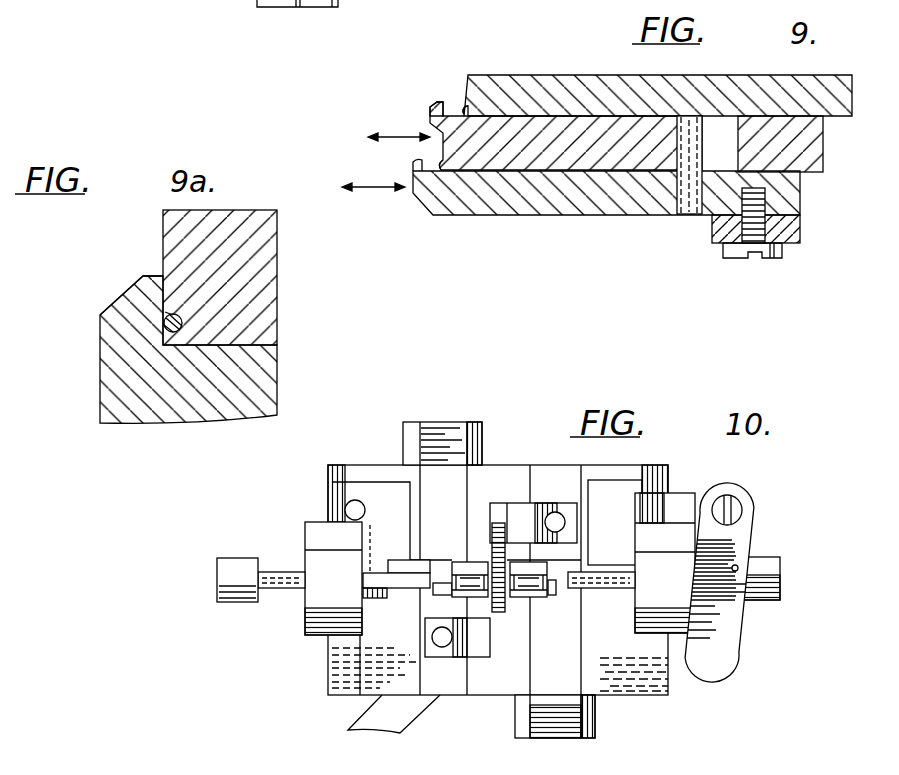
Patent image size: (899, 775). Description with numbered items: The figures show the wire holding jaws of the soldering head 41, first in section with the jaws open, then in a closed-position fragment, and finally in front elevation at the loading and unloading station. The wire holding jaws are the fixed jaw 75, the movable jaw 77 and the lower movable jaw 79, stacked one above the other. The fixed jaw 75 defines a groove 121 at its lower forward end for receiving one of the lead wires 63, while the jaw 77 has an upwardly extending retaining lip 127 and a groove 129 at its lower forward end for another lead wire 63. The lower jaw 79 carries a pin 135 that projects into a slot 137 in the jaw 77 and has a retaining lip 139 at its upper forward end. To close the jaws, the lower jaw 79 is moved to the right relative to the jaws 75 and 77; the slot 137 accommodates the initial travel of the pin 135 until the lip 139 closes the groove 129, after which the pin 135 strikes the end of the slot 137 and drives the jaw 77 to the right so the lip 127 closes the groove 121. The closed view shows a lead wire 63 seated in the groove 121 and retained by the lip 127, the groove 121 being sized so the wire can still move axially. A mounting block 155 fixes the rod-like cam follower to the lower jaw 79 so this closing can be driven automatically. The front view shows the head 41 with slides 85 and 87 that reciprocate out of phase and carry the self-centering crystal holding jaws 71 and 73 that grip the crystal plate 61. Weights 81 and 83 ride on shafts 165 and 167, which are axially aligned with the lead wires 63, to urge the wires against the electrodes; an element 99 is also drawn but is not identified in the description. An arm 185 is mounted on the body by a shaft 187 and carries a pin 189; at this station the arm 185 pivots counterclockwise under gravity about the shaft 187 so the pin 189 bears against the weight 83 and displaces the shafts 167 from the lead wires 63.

In FIG. 9, the wire holding jaw 75 is at (605, 75).
In FIG. 9A, the wire holding jaw 75 is at (258, 241).
In FIG. 9, the wire holding jaw 77 is at (426, 114).
In FIG. 9A, the wire holding jaw 77 is at (100, 388).
In FIG. 9, the lower jaw 79 is at (502, 216).
In FIG. 9, the groove 121 is at (468, 110).
In FIG. 9A, the groove 121 is at (172, 314).
In FIG. 9, the retaining lip 127 is at (438, 101).
In FIG. 9A, the retaining lip 127 is at (127, 298).
In FIG. 9, the groove 129 is at (446, 166).
In FIG. 9, the retaining lip 139 is at (416, 163).
In FIG. 9, the pin 135 is at (680, 141).
In FIG. 9, the slot 137 is at (732, 146).
In FIG. 9, the mounting block 155 is at (790, 230).
In FIG. 9A, the lead wires 63 is at (183, 323).
In FIG. 10, the lead wires 63 is at (445, 589).
In FIG. 10, the head 41 is at (495, 446).
In FIG. 10, the slide 85 is at (436, 432).
In FIG. 10, the crystal holding jaw 71 is at (498, 506).
In FIG. 10, the crystal holding jaw 73 is at (500, 646).
In FIG. 10, the crystal plate 61 is at (494, 547).
In FIG. 10, the weight 81 is at (233, 558).
In FIG. 10, the weight 83 is at (782, 577).
In FIG. 10, the shafts 165 is at (284, 572).
In FIG. 10, the shafts 167 is at (612, 575).
In FIG. 10, the bracket 99 is at (372, 715).
In FIG. 10, the slide 87 is at (565, 703).
In FIG. 10, the arm 185 is at (723, 641).
In FIG. 10, the shaft 187 is at (737, 508).
In FIG. 10, the pin 189 is at (738, 566).